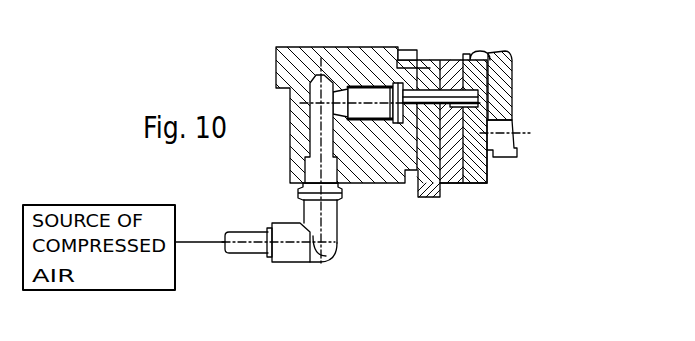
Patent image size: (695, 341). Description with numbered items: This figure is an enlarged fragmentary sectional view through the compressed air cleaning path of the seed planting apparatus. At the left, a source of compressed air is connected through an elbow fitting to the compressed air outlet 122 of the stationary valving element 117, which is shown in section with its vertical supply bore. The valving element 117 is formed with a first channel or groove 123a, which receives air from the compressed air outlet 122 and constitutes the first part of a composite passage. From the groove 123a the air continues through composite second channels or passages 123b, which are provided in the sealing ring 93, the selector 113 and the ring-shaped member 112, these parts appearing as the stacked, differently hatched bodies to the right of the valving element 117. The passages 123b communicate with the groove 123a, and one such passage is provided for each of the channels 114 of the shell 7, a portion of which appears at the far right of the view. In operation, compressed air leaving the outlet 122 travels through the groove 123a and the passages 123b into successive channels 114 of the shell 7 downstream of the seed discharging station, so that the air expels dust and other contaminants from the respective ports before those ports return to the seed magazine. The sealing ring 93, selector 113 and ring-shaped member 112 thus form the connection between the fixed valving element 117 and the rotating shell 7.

The shell 7 is at (505, 100).
The sealing ring 93 is at (424, 198).
The ring-shaped member 112 is at (486, 184).
The selector 113 is at (462, 185).
The channel 114 is at (513, 140).
The valving element 117 is at (397, 160).
The compressed air outlet 122 is at (349, 227).
The first channel or groove 123a is at (425, 58).
The composite second channels or passages 123b is at (508, 54).